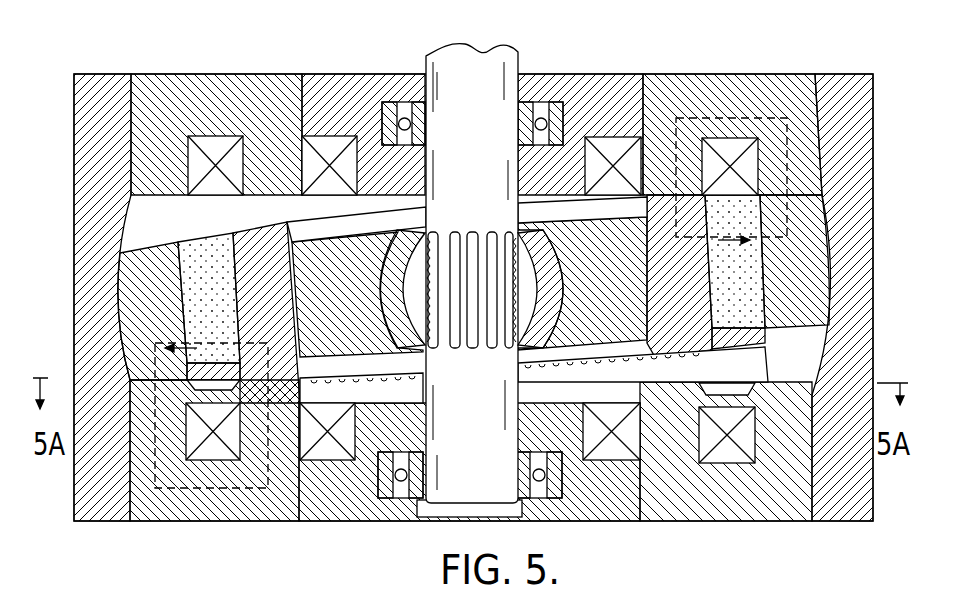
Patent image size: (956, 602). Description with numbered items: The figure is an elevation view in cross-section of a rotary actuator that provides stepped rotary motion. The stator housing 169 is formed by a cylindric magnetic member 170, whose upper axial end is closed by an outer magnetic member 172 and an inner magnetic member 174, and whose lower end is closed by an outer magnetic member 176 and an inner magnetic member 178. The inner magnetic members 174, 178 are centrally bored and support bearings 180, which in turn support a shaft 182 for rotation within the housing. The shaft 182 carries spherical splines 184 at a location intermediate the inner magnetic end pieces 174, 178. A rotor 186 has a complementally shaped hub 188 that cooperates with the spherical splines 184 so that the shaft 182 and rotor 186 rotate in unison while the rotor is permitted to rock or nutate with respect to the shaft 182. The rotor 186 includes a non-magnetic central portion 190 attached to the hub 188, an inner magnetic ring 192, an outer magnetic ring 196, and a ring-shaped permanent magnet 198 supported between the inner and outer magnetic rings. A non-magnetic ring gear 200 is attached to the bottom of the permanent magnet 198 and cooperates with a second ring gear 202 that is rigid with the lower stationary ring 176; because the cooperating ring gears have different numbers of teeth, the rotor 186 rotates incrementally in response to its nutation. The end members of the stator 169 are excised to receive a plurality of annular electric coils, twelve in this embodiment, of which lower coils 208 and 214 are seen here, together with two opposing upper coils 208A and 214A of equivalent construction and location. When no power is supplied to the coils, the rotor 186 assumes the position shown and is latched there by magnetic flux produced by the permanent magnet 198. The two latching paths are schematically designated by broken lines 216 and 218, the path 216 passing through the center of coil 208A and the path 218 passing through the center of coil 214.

The stator housing 169 is at (829, 66).
The cylindric magnetic member 170 is at (853, 260).
The outer magnetic member 172 is at (707, 92).
The inner magnetic member 174 is at (597, 82).
The outer magnetic member 176 is at (684, 522).
The inner magnetic member 178 is at (597, 522).
The bearings 180 is at (413, 137).
The shaft 182 is at (469, 213).
The spherical splines 184 is at (449, 346).
The rotor 186 is at (312, 213).
The hub 188 is at (540, 252).
The non-magnetic central portion 190 is at (341, 310).
The inner magnetic ring 192 is at (279, 329).
The outer magnetic ring 196 is at (163, 329).
The permanent magnet 198 is at (218, 291).
The ring gear 200 is at (736, 348).
The second ring gear 202 is at (735, 392).
The electric coil 208 is at (738, 435).
The upper electric coil 208A is at (749, 163).
The electric coil 214 is at (225, 431).
The upper electric coil 214A is at (237, 162).
The latching flux path 216 is at (733, 164).
The latching flux path 218 is at (208, 490).